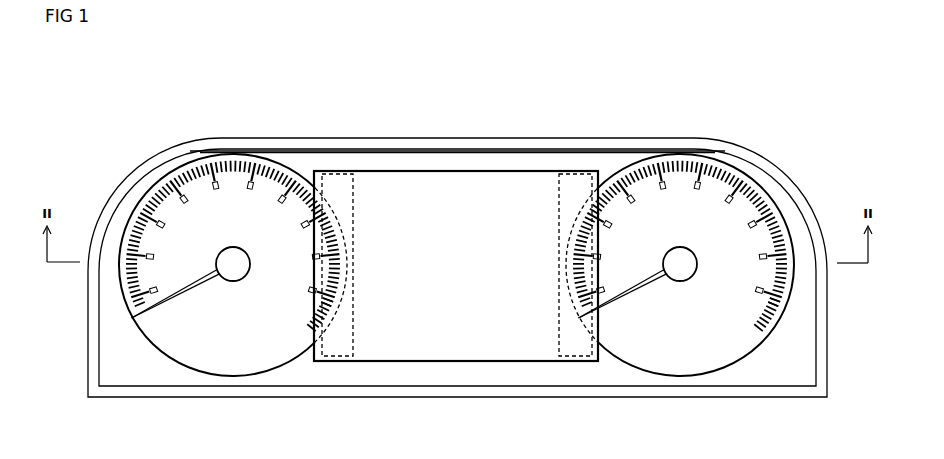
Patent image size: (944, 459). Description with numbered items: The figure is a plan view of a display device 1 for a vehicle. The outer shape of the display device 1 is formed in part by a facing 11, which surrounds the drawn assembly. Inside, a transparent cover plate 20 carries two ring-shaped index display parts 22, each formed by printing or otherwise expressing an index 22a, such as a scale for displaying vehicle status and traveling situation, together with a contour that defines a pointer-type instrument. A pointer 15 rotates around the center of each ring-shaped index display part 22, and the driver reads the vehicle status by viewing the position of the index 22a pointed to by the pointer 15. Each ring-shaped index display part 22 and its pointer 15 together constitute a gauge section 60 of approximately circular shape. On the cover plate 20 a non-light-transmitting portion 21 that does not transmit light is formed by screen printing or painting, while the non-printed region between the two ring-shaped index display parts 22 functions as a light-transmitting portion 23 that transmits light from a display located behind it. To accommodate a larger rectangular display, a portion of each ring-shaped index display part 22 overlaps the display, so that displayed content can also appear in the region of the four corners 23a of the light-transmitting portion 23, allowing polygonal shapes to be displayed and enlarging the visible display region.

The display device 1 is at (669, 88).
The facing 11 is at (602, 136).
The pointer 15 is at (241, 248).
The cover plate 20 is at (497, 140).
The non-light-transmitting portion 21 is at (343, 159).
The ring-shaped index display part 22 is at (228, 197).
The index 22a is at (129, 236).
The light-transmitting portion 23 is at (408, 192).
The four corners 23a is at (335, 172).
The gauge section 60 is at (457, 230).